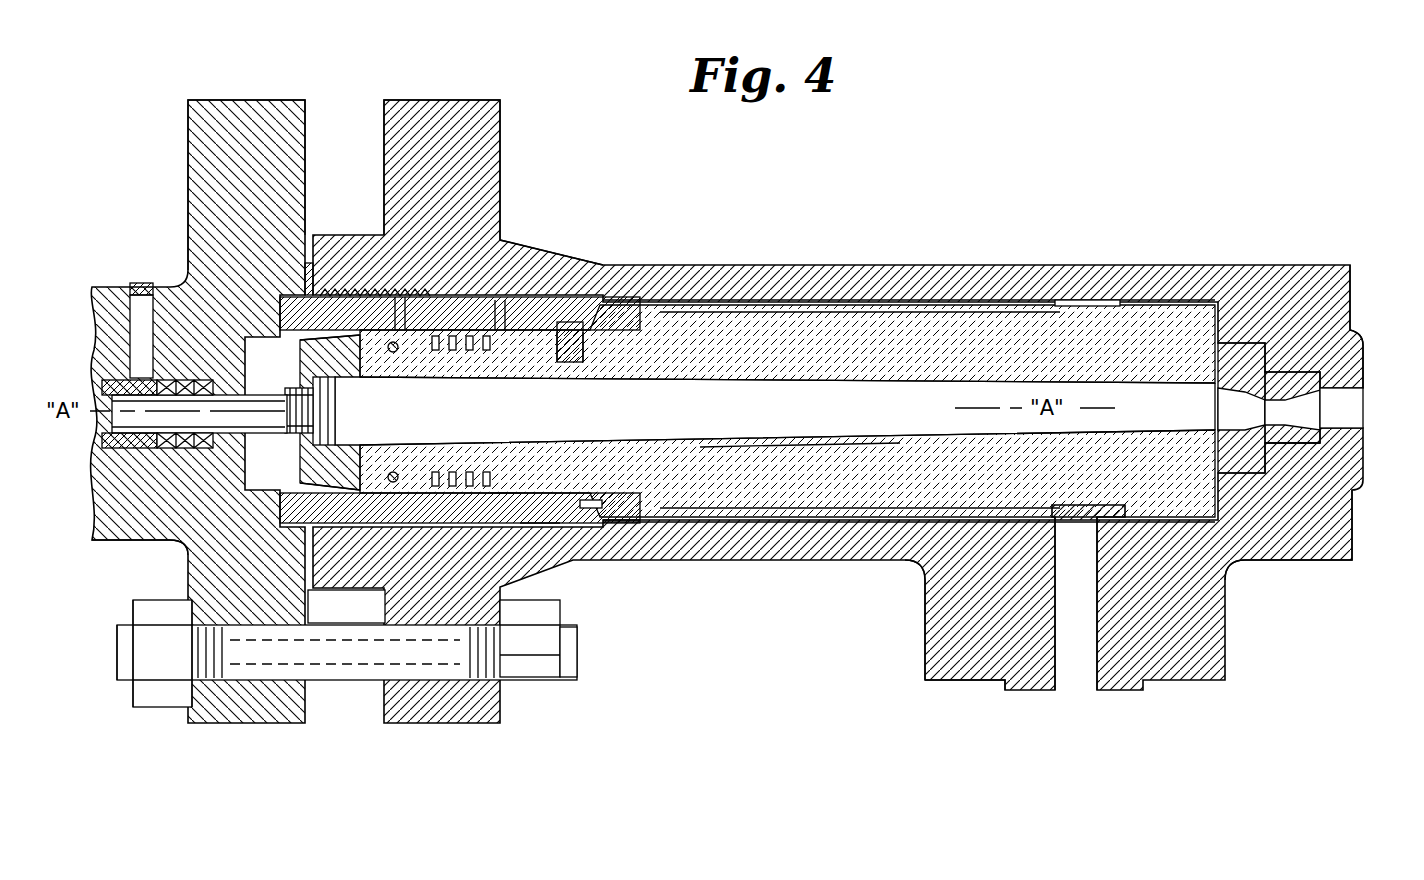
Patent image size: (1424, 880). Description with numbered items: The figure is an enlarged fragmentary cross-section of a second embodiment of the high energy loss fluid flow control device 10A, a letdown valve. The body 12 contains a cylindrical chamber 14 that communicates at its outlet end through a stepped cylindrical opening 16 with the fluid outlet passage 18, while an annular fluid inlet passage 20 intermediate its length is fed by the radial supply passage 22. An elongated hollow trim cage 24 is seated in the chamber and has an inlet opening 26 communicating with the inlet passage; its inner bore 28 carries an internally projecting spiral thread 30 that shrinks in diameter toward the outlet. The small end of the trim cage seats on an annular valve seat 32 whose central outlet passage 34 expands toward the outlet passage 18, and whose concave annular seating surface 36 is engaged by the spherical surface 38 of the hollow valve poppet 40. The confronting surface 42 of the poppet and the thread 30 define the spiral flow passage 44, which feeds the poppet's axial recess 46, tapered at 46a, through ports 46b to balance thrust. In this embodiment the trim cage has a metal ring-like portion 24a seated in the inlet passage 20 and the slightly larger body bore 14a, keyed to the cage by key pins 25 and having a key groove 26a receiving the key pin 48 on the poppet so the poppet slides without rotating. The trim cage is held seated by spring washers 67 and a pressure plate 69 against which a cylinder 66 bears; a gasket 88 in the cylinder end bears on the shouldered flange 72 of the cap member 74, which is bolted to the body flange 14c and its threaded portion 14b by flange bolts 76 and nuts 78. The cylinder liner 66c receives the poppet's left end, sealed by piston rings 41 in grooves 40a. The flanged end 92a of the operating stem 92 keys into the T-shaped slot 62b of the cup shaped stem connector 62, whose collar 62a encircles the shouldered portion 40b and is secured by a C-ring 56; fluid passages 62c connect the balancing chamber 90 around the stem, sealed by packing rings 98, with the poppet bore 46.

The high pressure fluid flow control device 10A is at (900, 260).
The valve body 12 is at (800, 560).
The cylindrical chamber 14 is at (1183, 300).
The valve body bore 14a is at (485, 298).
The housing threaded portion 14b is at (335, 295).
The radial flange 14c is at (445, 100).
The stepped diameter cylindrical opening 16 is at (1320, 435).
The fluid outlet passage 18 is at (1322, 398).
The annular fluid inlet passage 20 is at (1078, 300).
The supply passage 22 is at (1098, 690).
The trim cage 24 is at (838, 306).
The ring-like portion 24a is at (592, 510).
The key pins 25 is at (605, 505).
The inlet opening 26 is at (640, 318).
The key groove 26a is at (565, 362).
The inner bore 28 is at (690, 318).
The spiral thread 30 is at (925, 302).
The annular valve seat 32 is at (1245, 345).
The central outlet passage 34 is at (1300, 410).
The concave annular valve seating surface 36 is at (1280, 375).
The spherical surface 38 is at (1262, 445).
The valve poppet 40 is at (790, 335).
The grooves 40a is at (487, 470).
The shouldered portion 40b is at (346, 606).
The piston rings 41 is at (471, 352).
The confronting surface of poppet 42 is at (875, 520).
The spiral flow passage 44 is at (915, 558).
The axial recess 46 is at (787, 411).
The frustroconical taper 46a is at (793, 447).
The ports 46b is at (1215, 395).
The key pin 48 is at (575, 345).
The C-ring 56 is at (392, 340).
The stem connector 62 is at (296, 370).
The thin-walled collar 62a is at (370, 490).
The radial key slot 62b is at (312, 452).
The fluid passages 62c is at (393, 352).
The cylinder 66 is at (412, 300).
The cylinder liner 66c is at (505, 493).
The spring washers 67 is at (540, 330).
The pressure plate 69 is at (535, 527).
The flange 72 is at (245, 100).
The cap member 74 is at (186, 178).
The flange bolts 76 is at (577, 672).
The nuts 78 is at (170, 707).
The gasket 88 is at (300, 520).
The balancing chamber 90 is at (313, 440).
The operating stem 92 is at (122, 426).
The flanged end 92a is at (332, 400).
The packing rings 98 is at (205, 380).